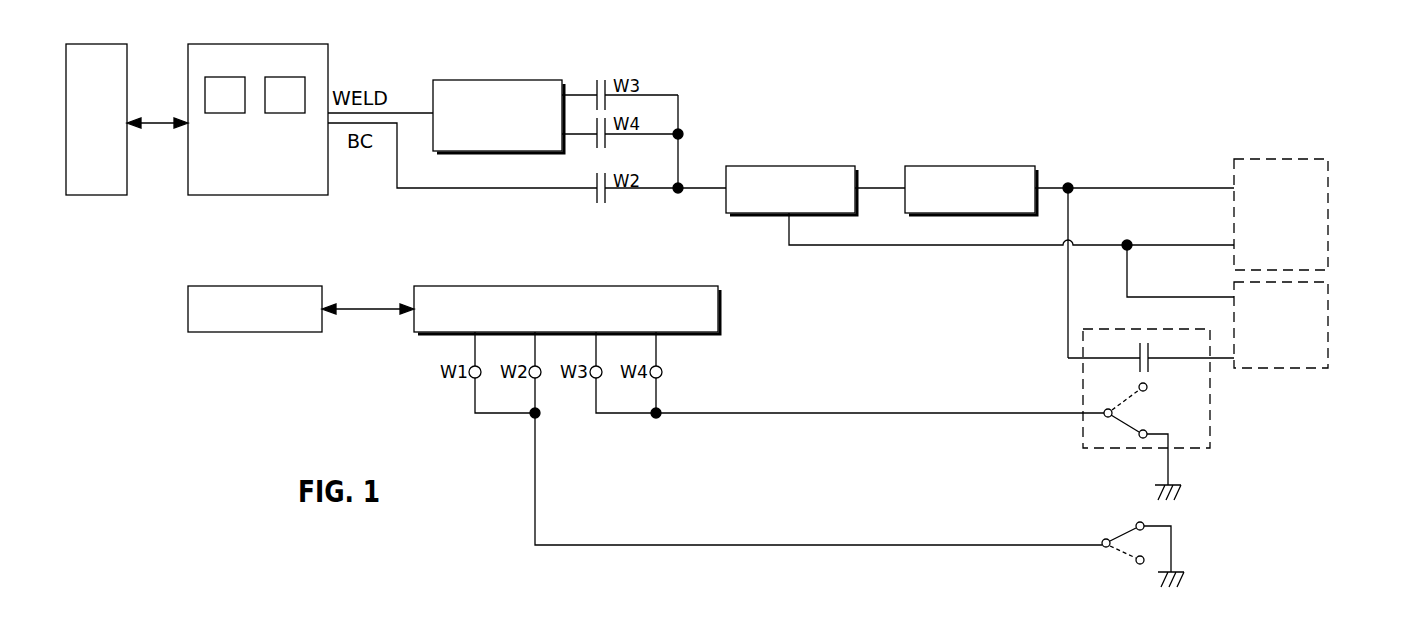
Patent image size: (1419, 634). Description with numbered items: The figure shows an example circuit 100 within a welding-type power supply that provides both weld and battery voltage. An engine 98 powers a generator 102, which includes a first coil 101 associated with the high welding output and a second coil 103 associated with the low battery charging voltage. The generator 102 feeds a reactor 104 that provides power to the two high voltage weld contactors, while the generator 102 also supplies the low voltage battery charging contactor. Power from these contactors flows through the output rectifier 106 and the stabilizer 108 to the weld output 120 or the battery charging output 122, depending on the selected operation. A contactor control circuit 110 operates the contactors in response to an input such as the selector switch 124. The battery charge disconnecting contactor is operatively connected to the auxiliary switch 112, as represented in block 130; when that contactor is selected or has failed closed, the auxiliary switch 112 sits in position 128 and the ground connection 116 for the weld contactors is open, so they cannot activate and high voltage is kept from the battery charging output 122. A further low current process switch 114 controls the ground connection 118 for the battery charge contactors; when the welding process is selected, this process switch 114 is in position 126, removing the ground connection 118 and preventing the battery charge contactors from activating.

The engine 98 is at (96, 119).
The circuit 100 is at (1163, 122).
The first coil 101 is at (225, 113).
The generator 102 is at (258, 119).
The second coil 103 is at (290, 77).
The reactor 104 is at (498, 80).
The output rectifier 106 is at (805, 166).
The stabilizer 108 is at (985, 166).
The contactor control circuit 110 is at (445, 286).
The auxiliary switch SW1 112 is at (1132, 440).
The switch S3 114 is at (1115, 528).
The ground connection 116 is at (1168, 470).
The ground connection 118 is at (1172, 560).
The weld output 120 is at (1328, 218).
The battery charging output 122 is at (1328, 333).
The selector switch 124 is at (205, 286).
The position 126 is at (1127, 570).
The position 128 is at (1112, 398).
The block 130 is at (1167, 412).